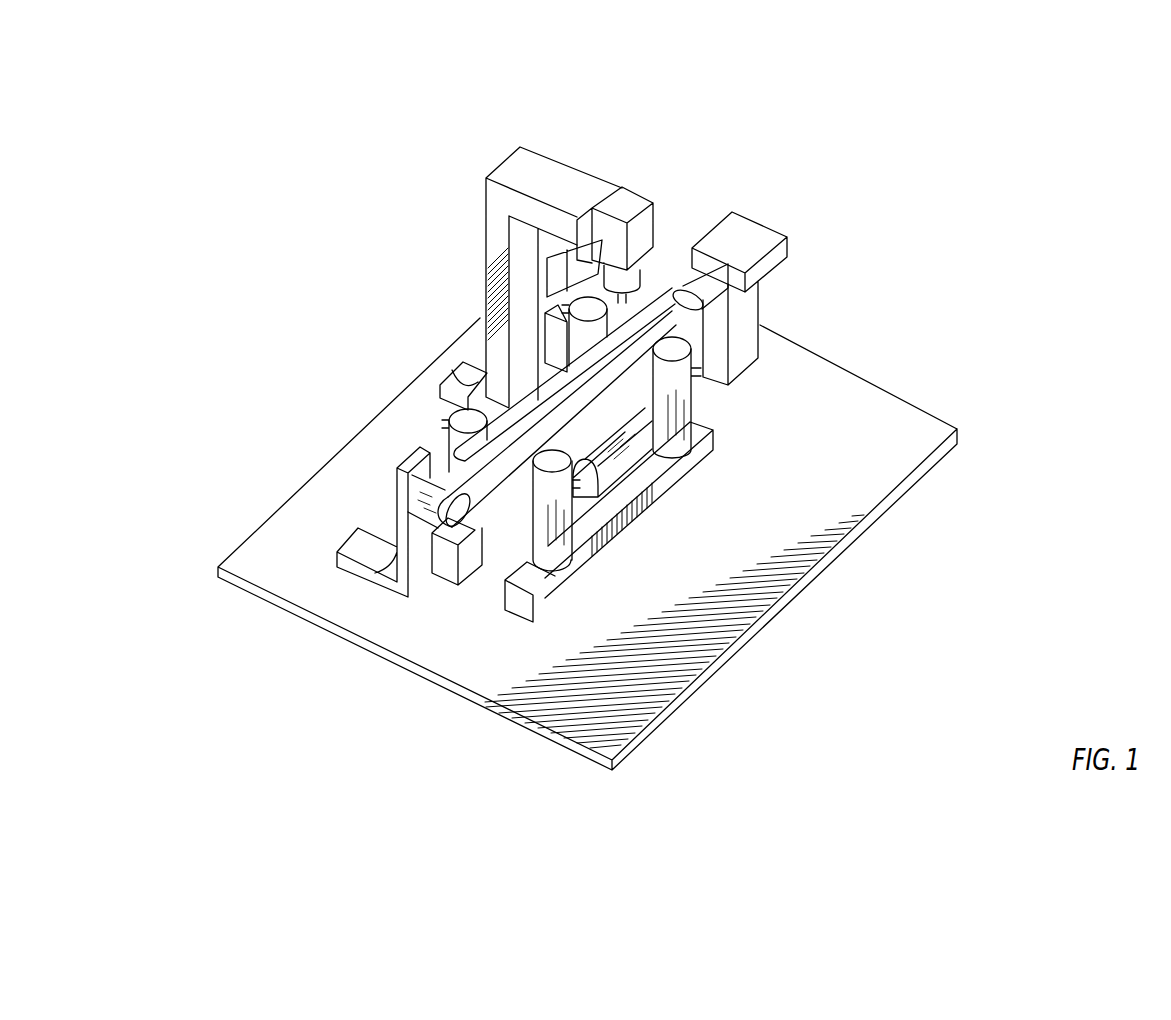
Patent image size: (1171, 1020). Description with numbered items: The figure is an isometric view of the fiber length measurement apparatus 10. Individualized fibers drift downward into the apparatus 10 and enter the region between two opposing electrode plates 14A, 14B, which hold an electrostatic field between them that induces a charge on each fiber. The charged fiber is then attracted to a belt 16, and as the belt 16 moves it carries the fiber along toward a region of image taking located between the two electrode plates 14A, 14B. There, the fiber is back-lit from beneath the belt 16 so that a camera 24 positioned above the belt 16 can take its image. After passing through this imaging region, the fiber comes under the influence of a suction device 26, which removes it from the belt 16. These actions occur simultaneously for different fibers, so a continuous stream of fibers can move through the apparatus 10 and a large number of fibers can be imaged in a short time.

The fiber length measurement apparatus 10 is at (1047, 336).
The electrode plate 14A is at (463, 452).
The electrode plate 14B is at (683, 325).
The belt 16 is at (473, 505).
The camera 24 is at (613, 197).
The suction device 26 is at (735, 232).